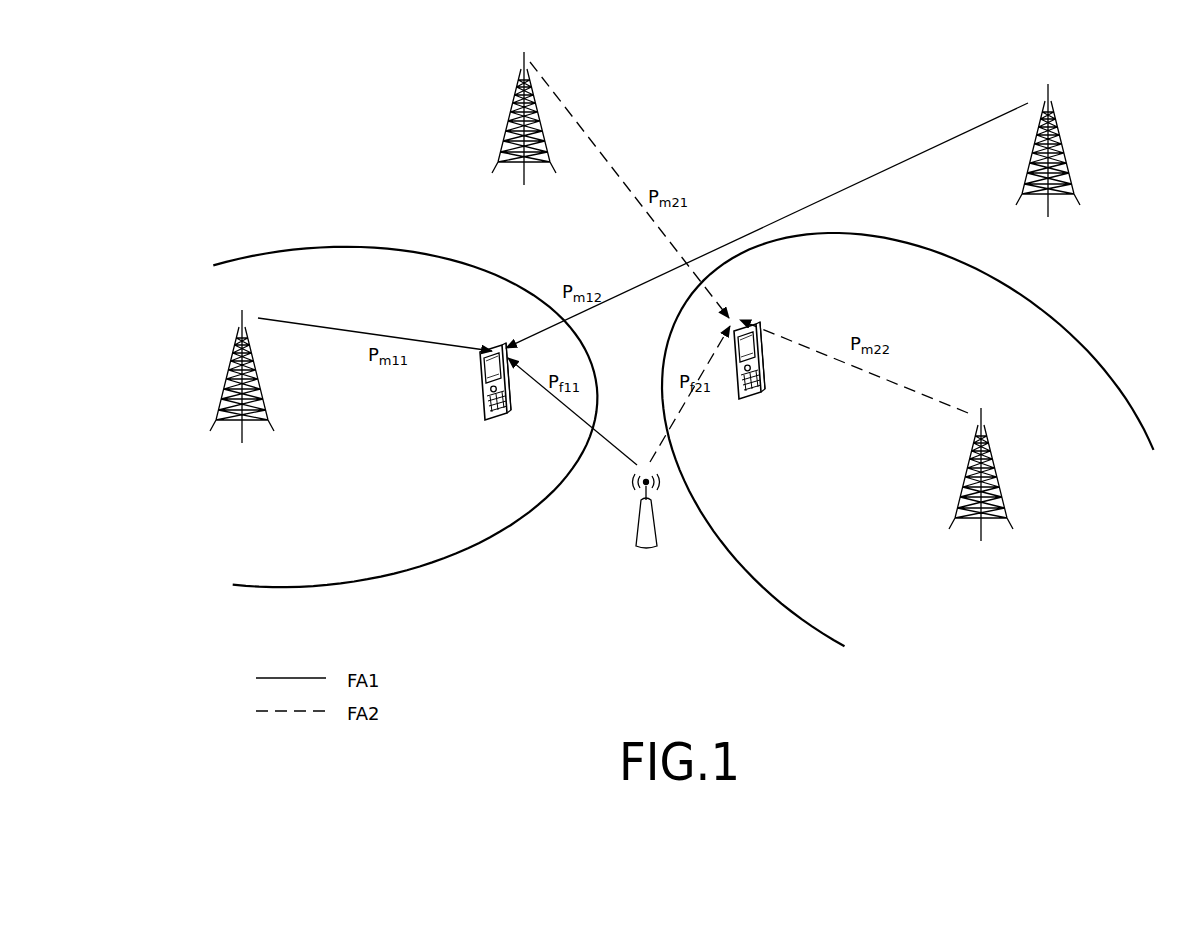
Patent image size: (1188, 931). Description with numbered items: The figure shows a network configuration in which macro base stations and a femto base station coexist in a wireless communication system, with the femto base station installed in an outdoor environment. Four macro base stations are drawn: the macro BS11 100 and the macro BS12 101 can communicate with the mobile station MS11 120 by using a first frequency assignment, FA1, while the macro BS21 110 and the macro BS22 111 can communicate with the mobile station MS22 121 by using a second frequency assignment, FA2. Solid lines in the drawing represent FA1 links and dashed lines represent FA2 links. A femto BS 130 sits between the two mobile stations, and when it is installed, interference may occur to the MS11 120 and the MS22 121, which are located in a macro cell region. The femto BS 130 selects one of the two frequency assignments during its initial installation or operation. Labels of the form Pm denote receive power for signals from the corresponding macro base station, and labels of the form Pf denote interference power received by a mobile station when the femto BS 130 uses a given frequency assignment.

The macro BS11 100 is at (228, 388).
The macro BS12 101 is at (1068, 164).
The macro BS21 110 is at (508, 130).
The macro BS22 111 is at (1003, 488).
The MS11 120 is at (481, 389).
The MS22 121 is at (762, 372).
The femto BS 130 is at (636, 531).